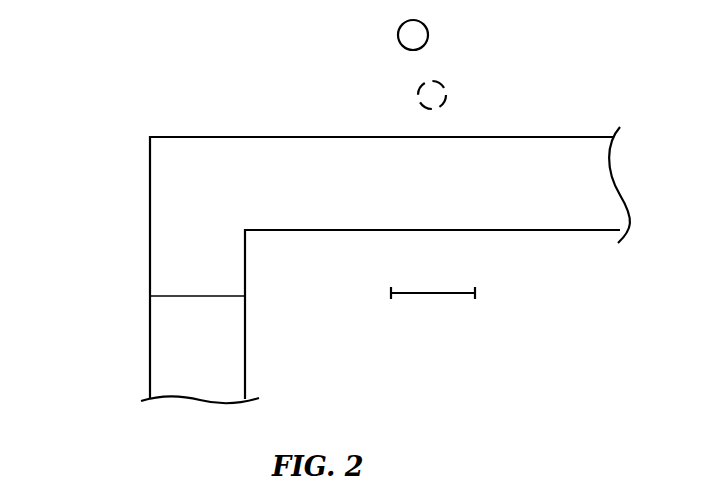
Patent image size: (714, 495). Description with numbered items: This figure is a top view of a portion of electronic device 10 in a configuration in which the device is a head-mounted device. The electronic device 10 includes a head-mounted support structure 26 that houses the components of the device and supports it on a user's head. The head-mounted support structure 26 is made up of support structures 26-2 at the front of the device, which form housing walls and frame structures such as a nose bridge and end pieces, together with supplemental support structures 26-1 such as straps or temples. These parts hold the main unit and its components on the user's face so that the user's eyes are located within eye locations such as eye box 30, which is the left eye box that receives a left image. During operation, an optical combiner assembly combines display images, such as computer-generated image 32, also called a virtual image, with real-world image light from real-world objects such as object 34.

The electronic device 10 is at (161, 77).
The head-mounted support structure 26 is at (57, 137).
The support structures 26-1 is at (162, 354).
The support structures 26-2 is at (162, 182).
The eye box 30 is at (478, 292).
The computer-generated image 32 is at (443, 82).
The object 34 is at (428, 32).